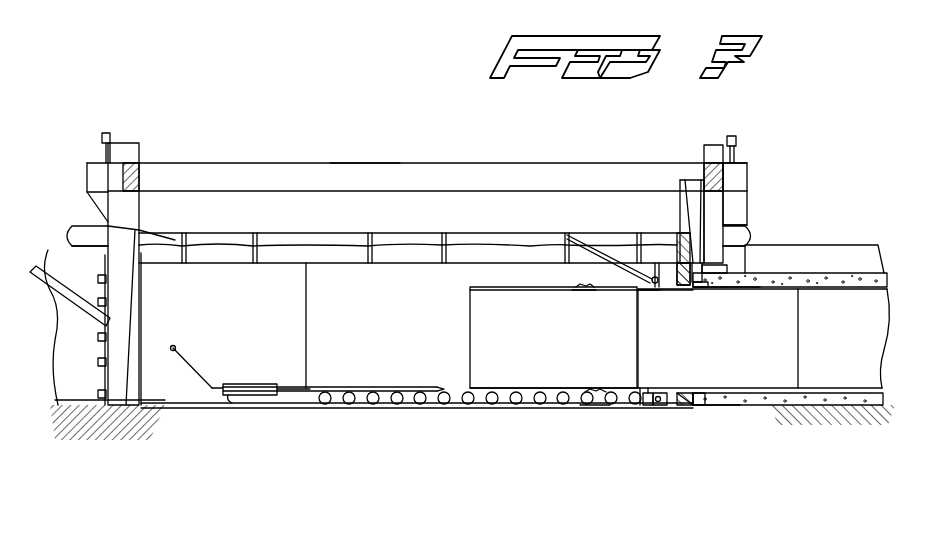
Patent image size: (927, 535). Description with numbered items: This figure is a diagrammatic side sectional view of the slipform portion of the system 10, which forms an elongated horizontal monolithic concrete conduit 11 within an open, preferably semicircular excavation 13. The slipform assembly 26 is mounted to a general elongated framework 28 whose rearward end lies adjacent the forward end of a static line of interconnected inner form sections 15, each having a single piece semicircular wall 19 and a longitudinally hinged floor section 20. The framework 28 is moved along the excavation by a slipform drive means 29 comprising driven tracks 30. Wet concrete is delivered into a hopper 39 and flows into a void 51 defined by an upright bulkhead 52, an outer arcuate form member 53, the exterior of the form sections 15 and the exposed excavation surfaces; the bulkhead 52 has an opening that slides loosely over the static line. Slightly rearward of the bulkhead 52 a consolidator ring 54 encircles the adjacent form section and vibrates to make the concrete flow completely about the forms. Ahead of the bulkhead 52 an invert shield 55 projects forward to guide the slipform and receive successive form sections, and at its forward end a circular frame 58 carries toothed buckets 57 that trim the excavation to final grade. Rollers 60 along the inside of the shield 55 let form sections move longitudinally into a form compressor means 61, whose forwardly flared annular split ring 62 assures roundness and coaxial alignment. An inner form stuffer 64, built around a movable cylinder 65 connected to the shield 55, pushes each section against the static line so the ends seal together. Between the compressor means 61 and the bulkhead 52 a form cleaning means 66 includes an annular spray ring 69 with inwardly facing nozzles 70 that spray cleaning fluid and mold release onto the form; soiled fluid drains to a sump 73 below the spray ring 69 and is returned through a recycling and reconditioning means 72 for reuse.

The system 10 is at (752, 193).
The monolithic concrete conduit 11 is at (810, 272).
The excavation 13 is at (845, 256).
The inner form section 15 is at (650, 322).
The semicircular wall 19 is at (548, 288).
The floor section 20 is at (556, 388).
The slipform assembly 26 is at (510, 163).
The elongated framework 28 is at (332, 163).
The slipform drive means 29 is at (80, 226).
The driven tracks 30 is at (92, 247).
The hopper 39 is at (688, 215).
The void 51 is at (700, 292).
The upright bulkhead 52 is at (680, 292).
The outer arcuate form member 53 is at (735, 290).
The consolidator ring 54 is at (692, 292).
The invert shield 55 is at (360, 410).
The toothed buckets 57 is at (98, 338).
The circular frame 58 is at (120, 296).
The rollers 60 is at (468, 392).
The form compressor means 61 is at (586, 290).
The annular split ring 62 is at (592, 290).
The inner form stuffer 64 is at (248, 384).
The movable cylinder 65 is at (255, 396).
The form cleaning means 66 is at (657, 406).
The annular spray ring 69 is at (642, 282).
The nozzles 70 is at (655, 292).
The recycling and reconditioning means 72 is at (648, 408).
The sump 73 is at (640, 366).